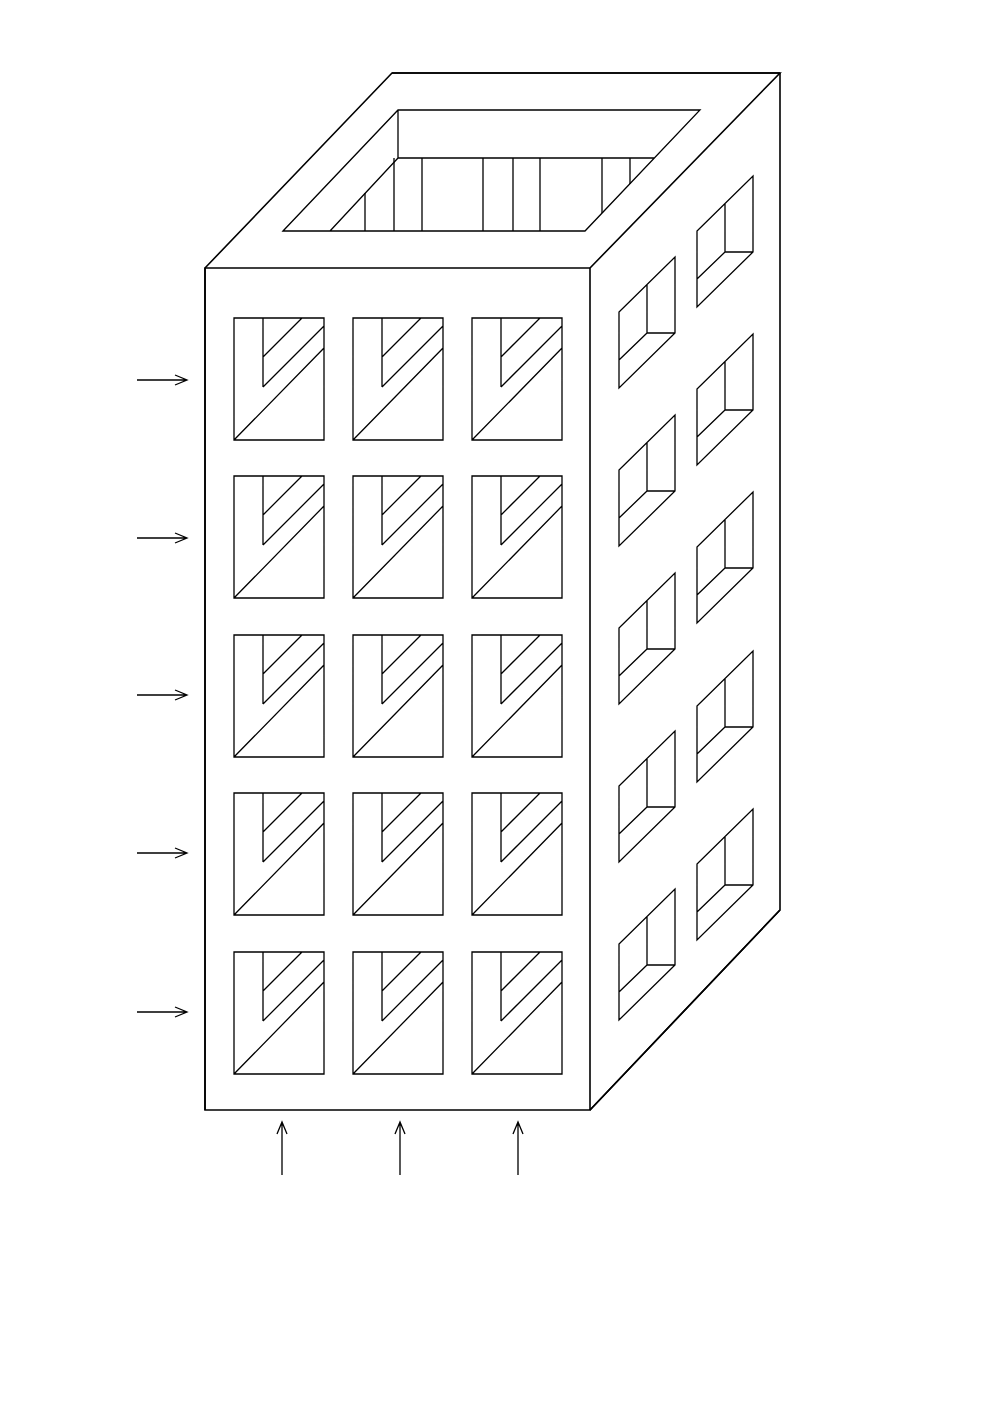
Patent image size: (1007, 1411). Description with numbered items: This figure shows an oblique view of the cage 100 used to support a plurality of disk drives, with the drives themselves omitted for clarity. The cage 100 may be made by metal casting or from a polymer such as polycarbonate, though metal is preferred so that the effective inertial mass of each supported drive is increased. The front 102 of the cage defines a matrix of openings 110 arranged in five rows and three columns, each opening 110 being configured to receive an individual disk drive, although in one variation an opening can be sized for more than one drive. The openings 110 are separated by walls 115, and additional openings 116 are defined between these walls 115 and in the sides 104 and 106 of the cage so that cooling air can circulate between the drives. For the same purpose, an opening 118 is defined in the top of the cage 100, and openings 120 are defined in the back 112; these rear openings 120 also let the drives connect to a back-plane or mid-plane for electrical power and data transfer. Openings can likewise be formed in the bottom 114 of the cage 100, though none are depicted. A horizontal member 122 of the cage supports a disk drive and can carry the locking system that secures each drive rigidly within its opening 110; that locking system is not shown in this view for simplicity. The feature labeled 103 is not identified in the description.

The cage 100 is at (807, 8).
The front 102 is at (215, 412).
The top face 103 is at (244, 238).
The side 104 is at (780, 340).
The side 106 is at (205, 296).
The openings 110 is at (499, 1093).
The back 112 is at (626, 72).
The bottom 114 is at (607, 1090).
The walls 115 is at (458, 733).
The openings 116 is at (503, 330).
The opening 118 is at (357, 175).
The openings 120 is at (565, 167).
The horizontal member 122 is at (553, 578).